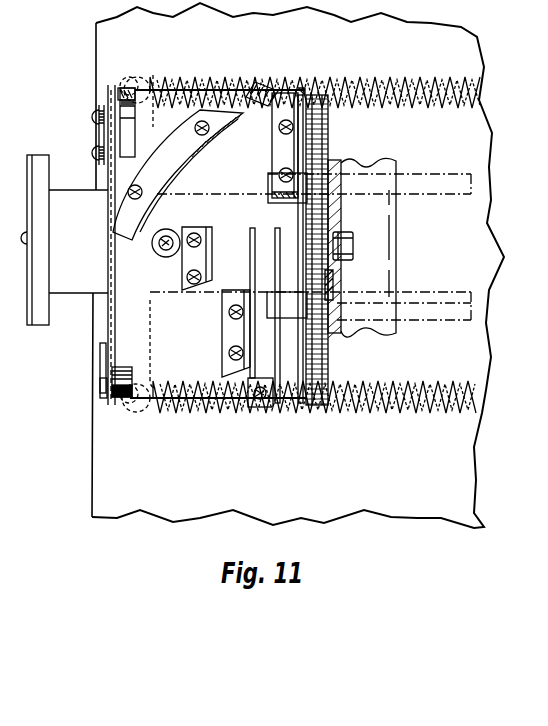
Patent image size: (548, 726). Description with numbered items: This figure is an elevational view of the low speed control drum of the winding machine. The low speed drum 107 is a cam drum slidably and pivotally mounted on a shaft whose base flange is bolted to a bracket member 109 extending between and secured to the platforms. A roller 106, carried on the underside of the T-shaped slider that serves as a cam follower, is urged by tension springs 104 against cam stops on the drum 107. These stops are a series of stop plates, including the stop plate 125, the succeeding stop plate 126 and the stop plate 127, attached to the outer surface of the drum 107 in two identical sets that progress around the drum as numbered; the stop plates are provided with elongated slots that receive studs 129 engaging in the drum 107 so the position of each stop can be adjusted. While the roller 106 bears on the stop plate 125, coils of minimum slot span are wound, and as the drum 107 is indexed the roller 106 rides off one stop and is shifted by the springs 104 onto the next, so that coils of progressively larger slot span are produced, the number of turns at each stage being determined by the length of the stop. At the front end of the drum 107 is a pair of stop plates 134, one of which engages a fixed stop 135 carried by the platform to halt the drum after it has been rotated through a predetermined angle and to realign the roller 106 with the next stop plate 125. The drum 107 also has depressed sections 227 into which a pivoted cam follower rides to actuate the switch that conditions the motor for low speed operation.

The tension springs 104 is at (390, 80).
The roller 106 is at (160, 250).
The low speed drum member 107 is at (180, 175).
The bracket member 109 is at (388, 266).
The stop plate 125 is at (181, 284).
The stop plate 126 is at (222, 313).
The stop plate 127 is at (262, 408).
The studs 129 is at (229, 353).
The stop plates 134 is at (100, 390).
The fixed stop 135 is at (99, 128).
The depressed sections 227 is at (118, 88).